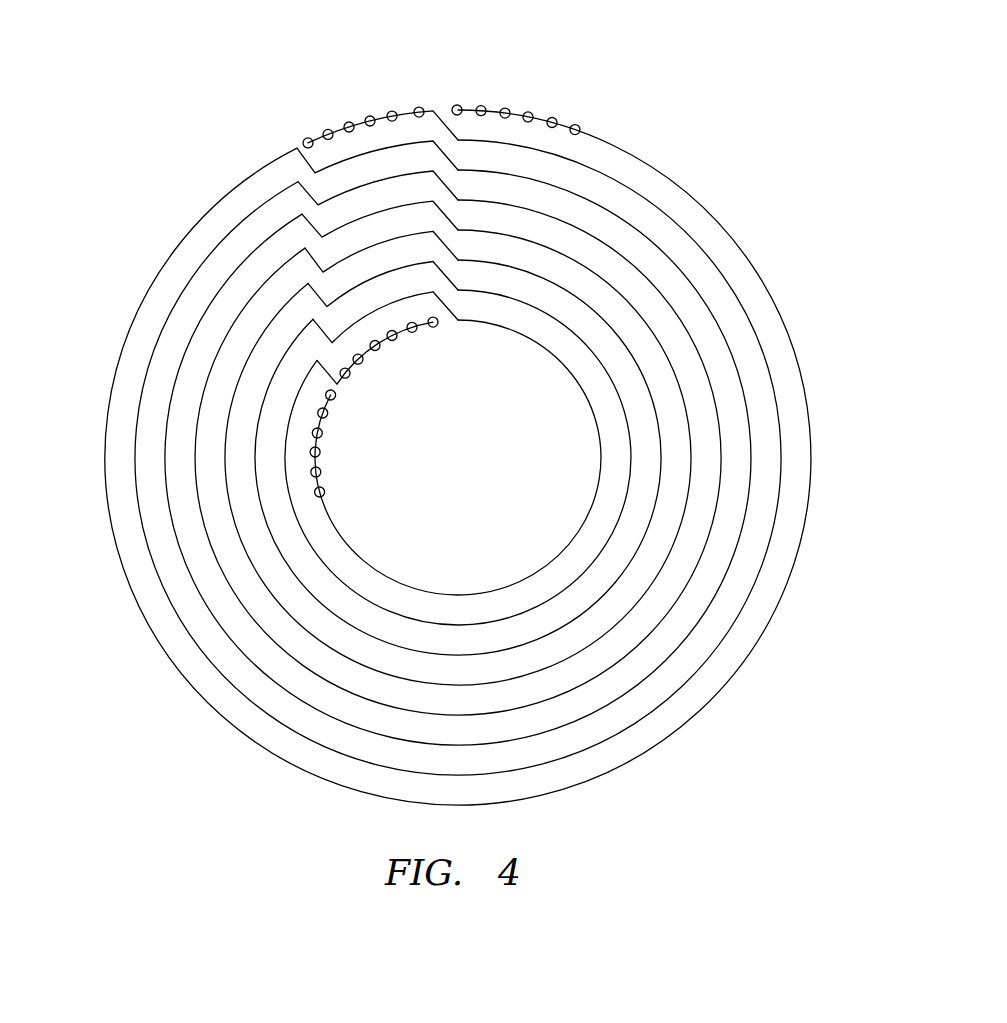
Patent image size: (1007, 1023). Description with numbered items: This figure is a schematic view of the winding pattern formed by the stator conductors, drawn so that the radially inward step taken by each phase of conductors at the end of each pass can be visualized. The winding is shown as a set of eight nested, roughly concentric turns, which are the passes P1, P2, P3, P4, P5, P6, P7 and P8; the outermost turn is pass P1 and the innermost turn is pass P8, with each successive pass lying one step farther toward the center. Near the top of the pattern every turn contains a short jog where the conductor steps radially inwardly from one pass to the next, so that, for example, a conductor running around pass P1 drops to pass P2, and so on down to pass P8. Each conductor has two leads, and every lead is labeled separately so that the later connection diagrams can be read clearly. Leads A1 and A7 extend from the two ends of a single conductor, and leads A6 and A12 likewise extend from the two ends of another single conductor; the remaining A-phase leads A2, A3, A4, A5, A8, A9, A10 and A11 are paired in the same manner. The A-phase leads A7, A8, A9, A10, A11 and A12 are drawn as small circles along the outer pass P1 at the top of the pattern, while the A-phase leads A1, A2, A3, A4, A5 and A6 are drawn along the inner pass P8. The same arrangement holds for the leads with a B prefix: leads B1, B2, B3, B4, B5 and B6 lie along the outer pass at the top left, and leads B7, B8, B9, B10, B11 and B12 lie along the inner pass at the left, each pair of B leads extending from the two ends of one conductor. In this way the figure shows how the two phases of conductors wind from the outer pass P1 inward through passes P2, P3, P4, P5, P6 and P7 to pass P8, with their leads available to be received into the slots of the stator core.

The pass P1 is at (791, 343).
The pass P2 is at (777, 398).
The pass P3 is at (749, 420).
The pass P4 is at (721, 452).
The pass P5 is at (690, 482).
The pass P6 is at (657, 502).
The pass P7 is at (614, 530).
The pass P8 is at (566, 548).
The lead A1 is at (345, 378).
The lead A2 is at (358, 364).
The lead A3 is at (377, 350).
The lead A4 is at (393, 340).
The lead A5 is at (414, 332).
The lead A6 is at (436, 326).
The lead A7 is at (456, 105).
The lead A8 is at (481, 106).
The lead A9 is at (505, 108).
The lead A10 is at (533, 114).
The lead A11 is at (557, 120).
The lead A12 is at (580, 129).
The lead B1 is at (303, 142).
The lead B2 is at (323, 131).
The lead B3 is at (345, 123).
The lead B4 is at (366, 117).
The lead B5 is at (388, 112).
The lead B6 is at (416, 108).
The lead B7 is at (315, 492).
The lead B8 is at (311, 472).
The lead B9 is at (310, 452).
The lead B10 is at (312, 433).
The lead B11 is at (318, 413).
The lead B12 is at (325, 395).